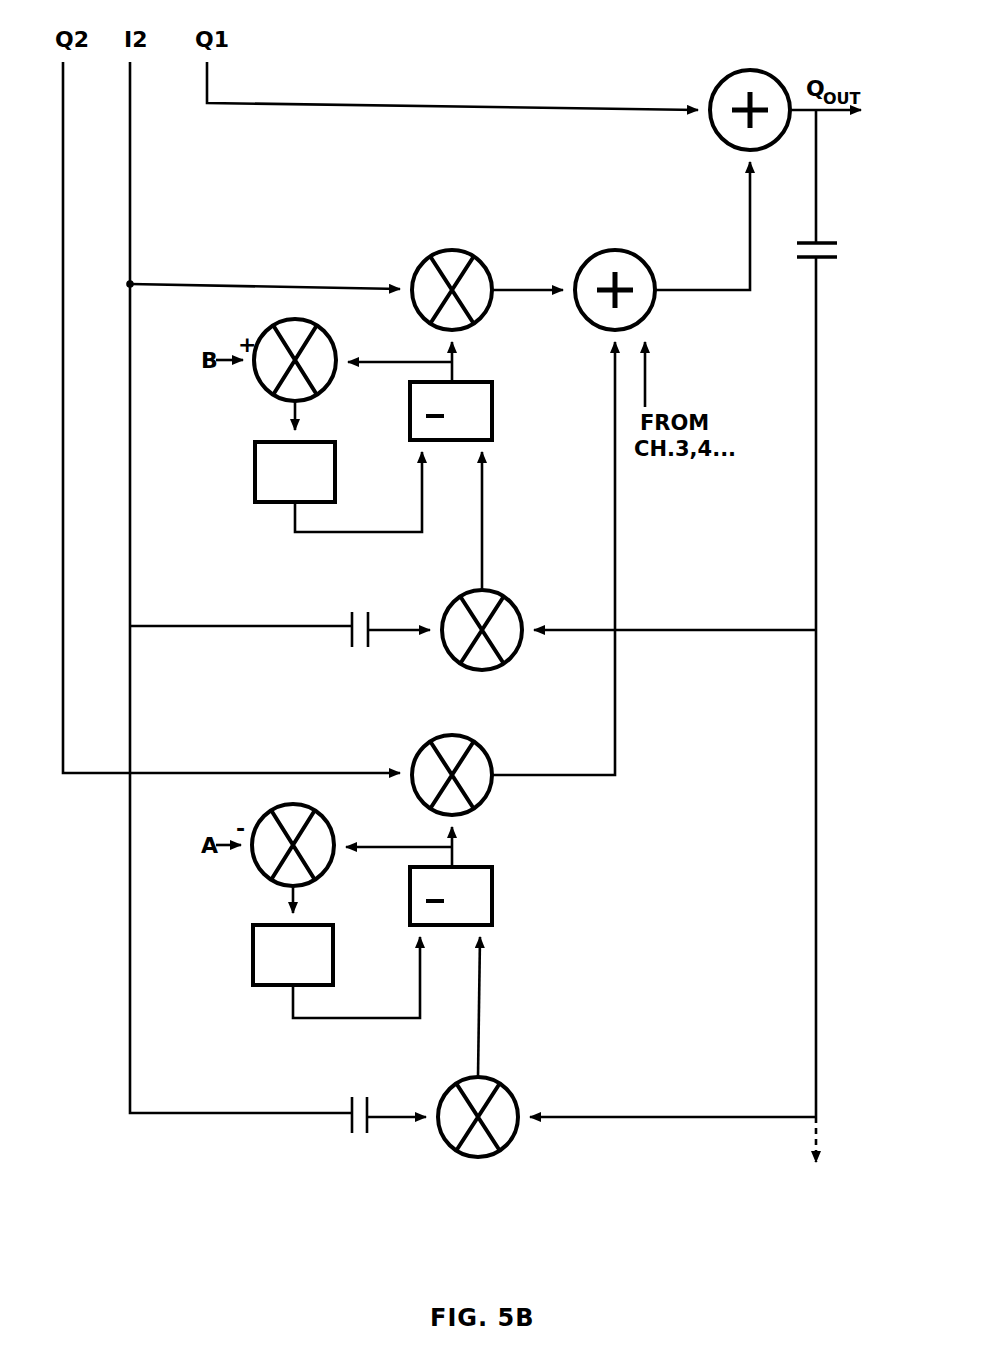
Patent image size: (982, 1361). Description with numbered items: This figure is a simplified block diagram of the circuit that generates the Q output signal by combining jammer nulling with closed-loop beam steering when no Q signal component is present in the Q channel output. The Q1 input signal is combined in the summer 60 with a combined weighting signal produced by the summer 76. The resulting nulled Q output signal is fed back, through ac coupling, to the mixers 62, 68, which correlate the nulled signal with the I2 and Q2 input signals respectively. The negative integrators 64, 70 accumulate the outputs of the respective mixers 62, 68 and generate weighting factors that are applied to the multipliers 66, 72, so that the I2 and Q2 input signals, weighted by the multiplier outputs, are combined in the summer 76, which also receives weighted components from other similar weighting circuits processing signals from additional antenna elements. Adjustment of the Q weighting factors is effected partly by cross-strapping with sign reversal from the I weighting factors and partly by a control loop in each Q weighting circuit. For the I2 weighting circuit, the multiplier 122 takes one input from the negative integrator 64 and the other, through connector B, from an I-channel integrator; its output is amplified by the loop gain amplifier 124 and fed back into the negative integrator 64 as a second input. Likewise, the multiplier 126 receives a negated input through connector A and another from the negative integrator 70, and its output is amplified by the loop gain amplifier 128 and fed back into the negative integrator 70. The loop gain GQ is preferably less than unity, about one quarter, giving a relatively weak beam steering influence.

The summer 60 is at (750, 70).
The mixer 62 is at (482, 670).
The negative integrator 64 is at (492, 413).
The multiplier 66 is at (452, 250).
The mixer 68 is at (478, 1157).
The negative integrator 70 is at (492, 898).
The multiplier 72 is at (452, 735).
The summer 76 is at (615, 250).
The multiplier 122 is at (322, 396).
The loop gain amplifier 124 is at (255, 470).
The multiplier 126 is at (320, 881).
The loop gain amplifier 128 is at (253, 957).